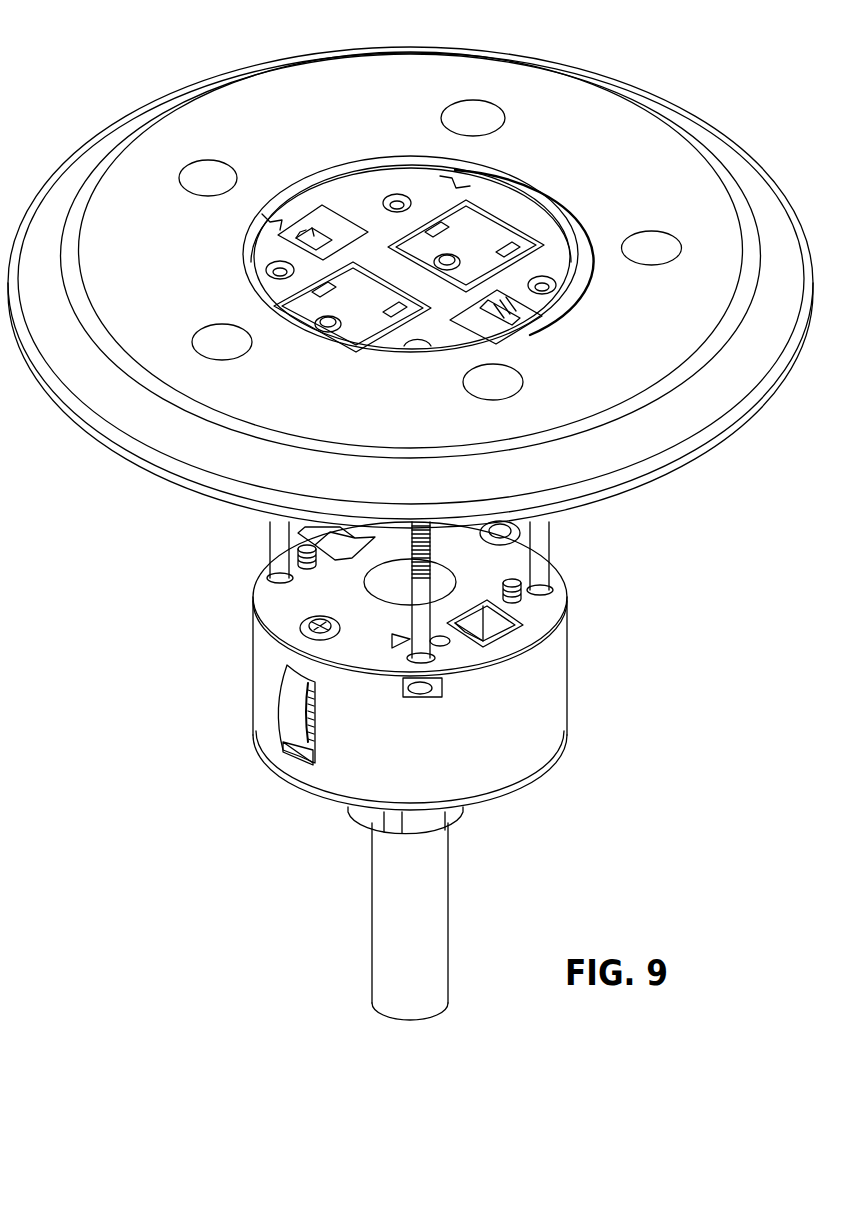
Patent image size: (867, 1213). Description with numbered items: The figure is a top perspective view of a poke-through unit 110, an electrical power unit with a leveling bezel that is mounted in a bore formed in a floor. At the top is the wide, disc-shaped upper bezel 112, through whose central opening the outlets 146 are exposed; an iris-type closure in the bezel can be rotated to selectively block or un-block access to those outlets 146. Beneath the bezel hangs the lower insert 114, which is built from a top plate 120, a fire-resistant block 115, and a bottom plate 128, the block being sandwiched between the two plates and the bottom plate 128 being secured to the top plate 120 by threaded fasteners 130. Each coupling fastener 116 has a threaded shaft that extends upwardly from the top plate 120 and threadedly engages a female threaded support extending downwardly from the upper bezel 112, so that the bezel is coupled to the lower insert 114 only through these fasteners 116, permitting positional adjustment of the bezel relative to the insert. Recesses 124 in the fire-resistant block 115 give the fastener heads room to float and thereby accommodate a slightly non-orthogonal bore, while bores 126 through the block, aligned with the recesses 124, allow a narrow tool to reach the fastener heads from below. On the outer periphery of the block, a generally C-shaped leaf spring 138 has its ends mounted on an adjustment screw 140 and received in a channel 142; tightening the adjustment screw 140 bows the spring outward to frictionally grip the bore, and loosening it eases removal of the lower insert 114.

The poke-through unit 110 is at (705, 58).
The upper bezel 112 is at (206, 88).
The lower insert 114 is at (600, 653).
The fire-resistant block 115 is at (566, 702).
The fastener 116 is at (276, 531).
The top plate 120 is at (564, 590).
The recess 124 is at (404, 696).
The bore 126 is at (438, 690).
The bottom plate 128 is at (525, 786).
The threaded fastener 130 is at (313, 564).
The leaf spring 138 is at (270, 706).
The adjustment screw 140 is at (300, 627).
The channel 142 is at (290, 762).
The outlets 146 is at (390, 216).